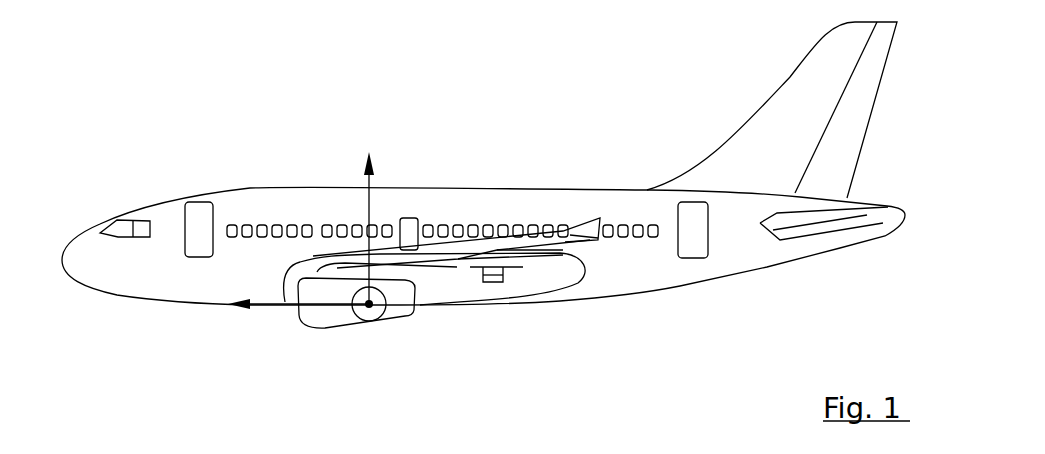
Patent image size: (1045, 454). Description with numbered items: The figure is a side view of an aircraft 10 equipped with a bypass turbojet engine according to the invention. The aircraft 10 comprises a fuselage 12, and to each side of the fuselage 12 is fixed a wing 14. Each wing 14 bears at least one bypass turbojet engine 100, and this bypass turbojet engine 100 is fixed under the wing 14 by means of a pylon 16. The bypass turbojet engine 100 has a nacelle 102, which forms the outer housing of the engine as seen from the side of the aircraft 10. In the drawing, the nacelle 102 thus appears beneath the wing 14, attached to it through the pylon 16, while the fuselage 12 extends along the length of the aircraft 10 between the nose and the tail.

The aircraft 10 is at (636, 112).
The fuselage 12 is at (650, 265).
The wing 14 is at (461, 255).
The pylon 16 is at (427, 278).
The bypass turbojet engine 100 is at (205, 346).
The nacelle 102 is at (343, 310).